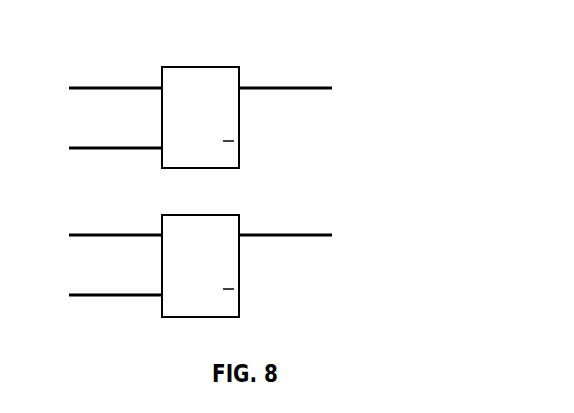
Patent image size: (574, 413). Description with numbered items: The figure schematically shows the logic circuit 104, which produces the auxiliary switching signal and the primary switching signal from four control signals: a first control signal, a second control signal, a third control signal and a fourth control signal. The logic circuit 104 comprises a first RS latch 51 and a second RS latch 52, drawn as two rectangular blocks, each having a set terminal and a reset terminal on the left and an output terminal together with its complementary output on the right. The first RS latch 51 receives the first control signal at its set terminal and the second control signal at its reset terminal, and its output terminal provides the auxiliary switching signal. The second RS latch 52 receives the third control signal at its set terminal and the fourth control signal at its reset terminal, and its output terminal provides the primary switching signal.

The logic circuit 104 is at (339, 38).
The first RS latch 51 is at (200, 105).
The second RS latch 52 is at (200, 263).